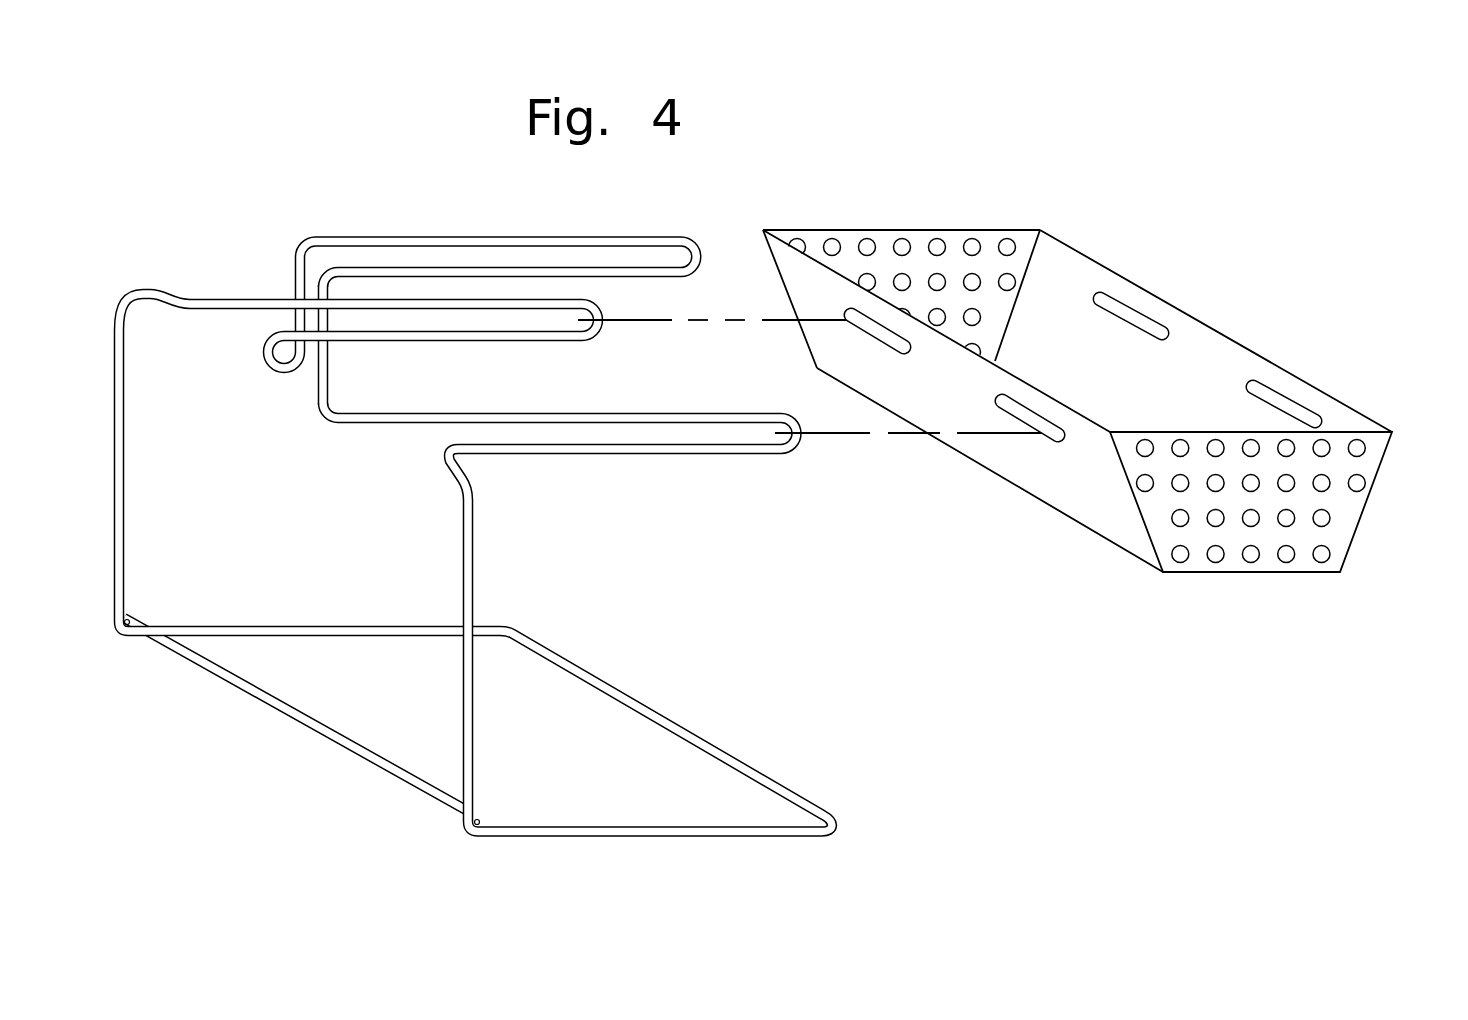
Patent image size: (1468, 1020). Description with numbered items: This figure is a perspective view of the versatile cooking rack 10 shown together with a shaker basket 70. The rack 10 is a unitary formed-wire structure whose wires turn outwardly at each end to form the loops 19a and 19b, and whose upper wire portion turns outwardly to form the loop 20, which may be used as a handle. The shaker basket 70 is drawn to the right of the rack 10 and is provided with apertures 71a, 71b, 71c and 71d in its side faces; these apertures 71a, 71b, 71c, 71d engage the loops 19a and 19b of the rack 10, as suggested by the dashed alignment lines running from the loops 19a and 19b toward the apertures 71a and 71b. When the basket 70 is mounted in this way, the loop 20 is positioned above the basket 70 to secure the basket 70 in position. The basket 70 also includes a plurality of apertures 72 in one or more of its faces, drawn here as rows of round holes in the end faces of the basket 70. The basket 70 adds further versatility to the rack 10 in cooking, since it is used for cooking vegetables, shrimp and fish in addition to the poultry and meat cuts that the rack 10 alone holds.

The cooking rack 10 is at (240, 258).
The loop 19a is at (593, 342).
The loop 19b is at (793, 455).
The loop 20 is at (693, 233).
The shaker basket 70 is at (1199, 310).
The aperture 71a is at (888, 340).
The aperture 71b is at (1060, 440).
The aperture 71c is at (1128, 317).
The aperture 71d is at (1280, 400).
The apertures 72 is at (903, 240).